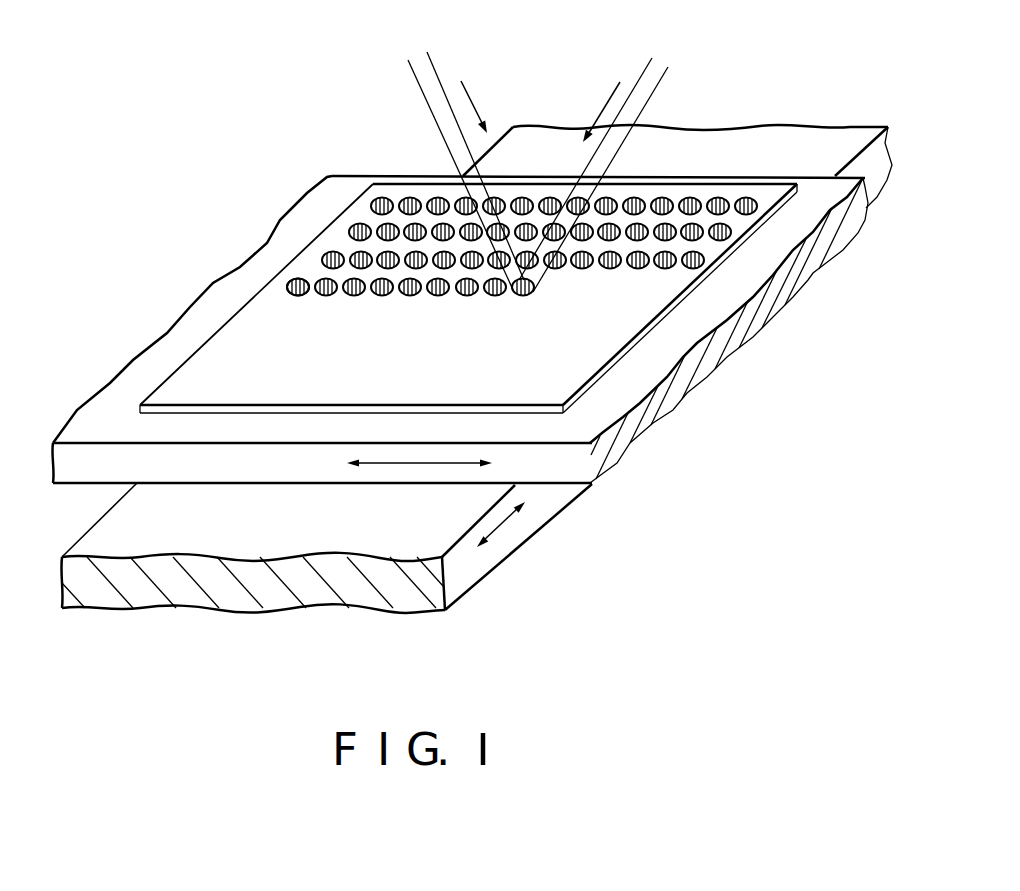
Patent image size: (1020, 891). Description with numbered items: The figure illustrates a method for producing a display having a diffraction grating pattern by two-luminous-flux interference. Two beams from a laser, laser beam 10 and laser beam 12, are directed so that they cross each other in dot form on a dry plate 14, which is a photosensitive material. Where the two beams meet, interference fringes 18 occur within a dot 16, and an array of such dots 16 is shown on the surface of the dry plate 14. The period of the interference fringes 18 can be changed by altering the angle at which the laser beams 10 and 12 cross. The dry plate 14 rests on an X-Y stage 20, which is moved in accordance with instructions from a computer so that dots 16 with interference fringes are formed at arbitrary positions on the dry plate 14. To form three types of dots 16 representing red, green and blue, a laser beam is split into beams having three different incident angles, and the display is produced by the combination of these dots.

The laser beam 10 is at (434, 64).
The laser beam 12 is at (667, 78).
The dry plate 14 is at (615, 341).
The dot 16 is at (298, 297).
The interference fringes 18 is at (294, 283).
The X-Y stage 20 is at (580, 470).